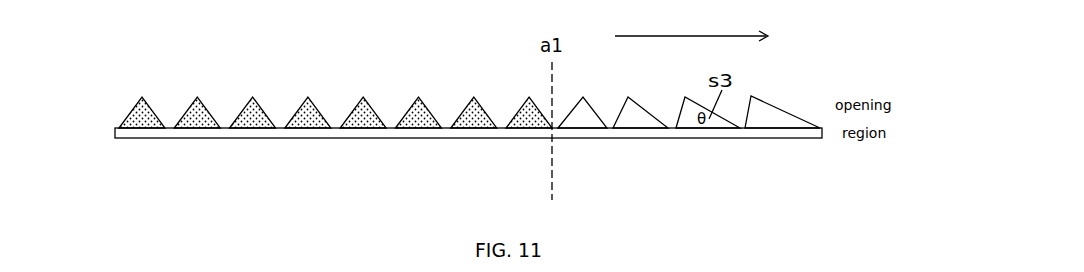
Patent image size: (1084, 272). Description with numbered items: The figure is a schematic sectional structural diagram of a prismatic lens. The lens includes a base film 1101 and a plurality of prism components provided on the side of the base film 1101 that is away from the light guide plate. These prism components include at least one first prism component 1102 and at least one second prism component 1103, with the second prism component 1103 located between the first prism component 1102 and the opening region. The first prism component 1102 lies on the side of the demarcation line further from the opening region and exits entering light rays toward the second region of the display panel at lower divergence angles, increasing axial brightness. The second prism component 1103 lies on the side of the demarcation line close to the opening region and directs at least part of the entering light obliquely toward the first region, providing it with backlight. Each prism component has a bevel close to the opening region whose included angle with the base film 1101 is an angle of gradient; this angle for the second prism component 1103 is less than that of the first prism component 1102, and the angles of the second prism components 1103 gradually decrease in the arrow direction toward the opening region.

The base film 1101 is at (286, 128).
The first prism component 1102 is at (359, 118).
The second prism component 1103 is at (687, 115).